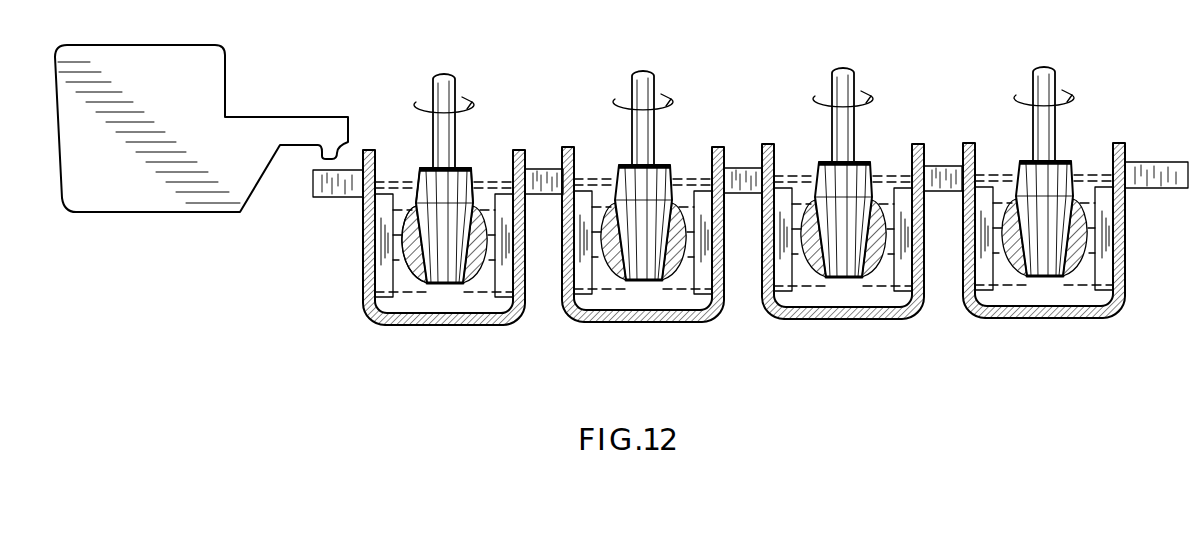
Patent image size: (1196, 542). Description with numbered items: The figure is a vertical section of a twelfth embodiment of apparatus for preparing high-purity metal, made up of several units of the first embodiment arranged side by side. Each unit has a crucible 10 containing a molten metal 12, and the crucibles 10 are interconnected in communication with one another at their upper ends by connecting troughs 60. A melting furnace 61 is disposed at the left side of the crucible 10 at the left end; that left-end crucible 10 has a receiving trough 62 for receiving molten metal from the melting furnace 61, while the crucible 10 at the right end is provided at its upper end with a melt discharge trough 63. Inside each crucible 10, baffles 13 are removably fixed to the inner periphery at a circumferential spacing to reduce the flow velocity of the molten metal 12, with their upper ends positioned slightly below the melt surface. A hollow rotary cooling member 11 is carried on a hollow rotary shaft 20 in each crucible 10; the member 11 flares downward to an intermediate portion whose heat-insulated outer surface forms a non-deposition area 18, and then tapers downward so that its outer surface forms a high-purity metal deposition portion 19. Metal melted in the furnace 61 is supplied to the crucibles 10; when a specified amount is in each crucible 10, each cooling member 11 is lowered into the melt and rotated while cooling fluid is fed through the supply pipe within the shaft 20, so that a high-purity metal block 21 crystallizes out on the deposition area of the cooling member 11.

The crucible 10 is at (518, 315).
The hollow rotary cooling member 11 is at (444, 290).
The molten metal 12 is at (483, 306).
The baffle 13 is at (382, 290).
The non-deposition area 18 is at (418, 192).
The high-purity metal deposition portion 19 is at (422, 247).
The hollow rotary shaft 20 is at (448, 84).
The high-purity metal block 21 is at (420, 264).
The connecting trough 60 is at (549, 170).
The melting furnace 61 is at (172, 214).
The receiving trough 62 is at (325, 198).
The melt discharge trough 63 is at (1153, 165).